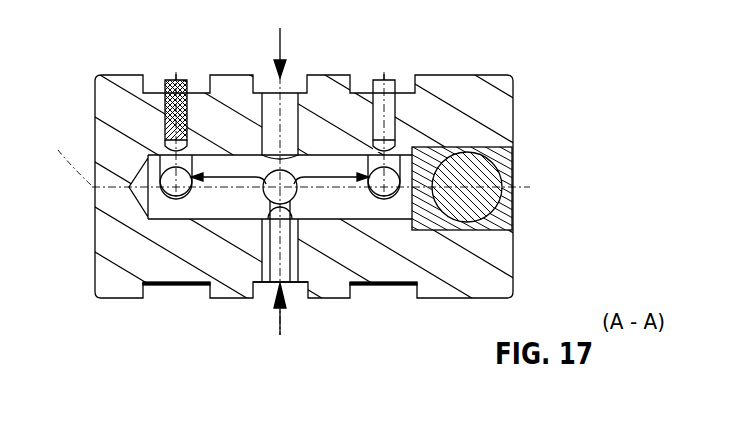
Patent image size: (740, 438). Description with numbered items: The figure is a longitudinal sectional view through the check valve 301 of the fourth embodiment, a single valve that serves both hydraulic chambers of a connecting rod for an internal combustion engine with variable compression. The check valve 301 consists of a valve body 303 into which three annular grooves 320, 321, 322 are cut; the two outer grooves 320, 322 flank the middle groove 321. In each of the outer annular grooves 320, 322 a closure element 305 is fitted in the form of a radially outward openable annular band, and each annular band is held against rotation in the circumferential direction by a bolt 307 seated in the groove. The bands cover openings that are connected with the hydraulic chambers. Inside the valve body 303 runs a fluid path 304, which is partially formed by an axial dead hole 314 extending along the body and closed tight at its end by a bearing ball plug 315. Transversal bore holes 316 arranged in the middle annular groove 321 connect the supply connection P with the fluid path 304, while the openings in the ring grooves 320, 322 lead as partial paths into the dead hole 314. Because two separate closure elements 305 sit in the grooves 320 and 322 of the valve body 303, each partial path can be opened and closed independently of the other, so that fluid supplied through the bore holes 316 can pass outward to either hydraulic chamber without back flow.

The check valve 301 is at (370, 219).
The valve body 303 is at (514, 255).
The fluid path 304 is at (302, 256).
The closure element 305 is at (356, 90).
The bolt 307 is at (392, 82).
The axial dead hole 314 is at (153, 198).
The bearing ball plug 315 is at (503, 176).
The transversal bore hole 316 is at (296, 97).
The annular groove 320 is at (148, 288).
The annular groove 321 is at (266, 286).
The annular groove 322 is at (356, 289).